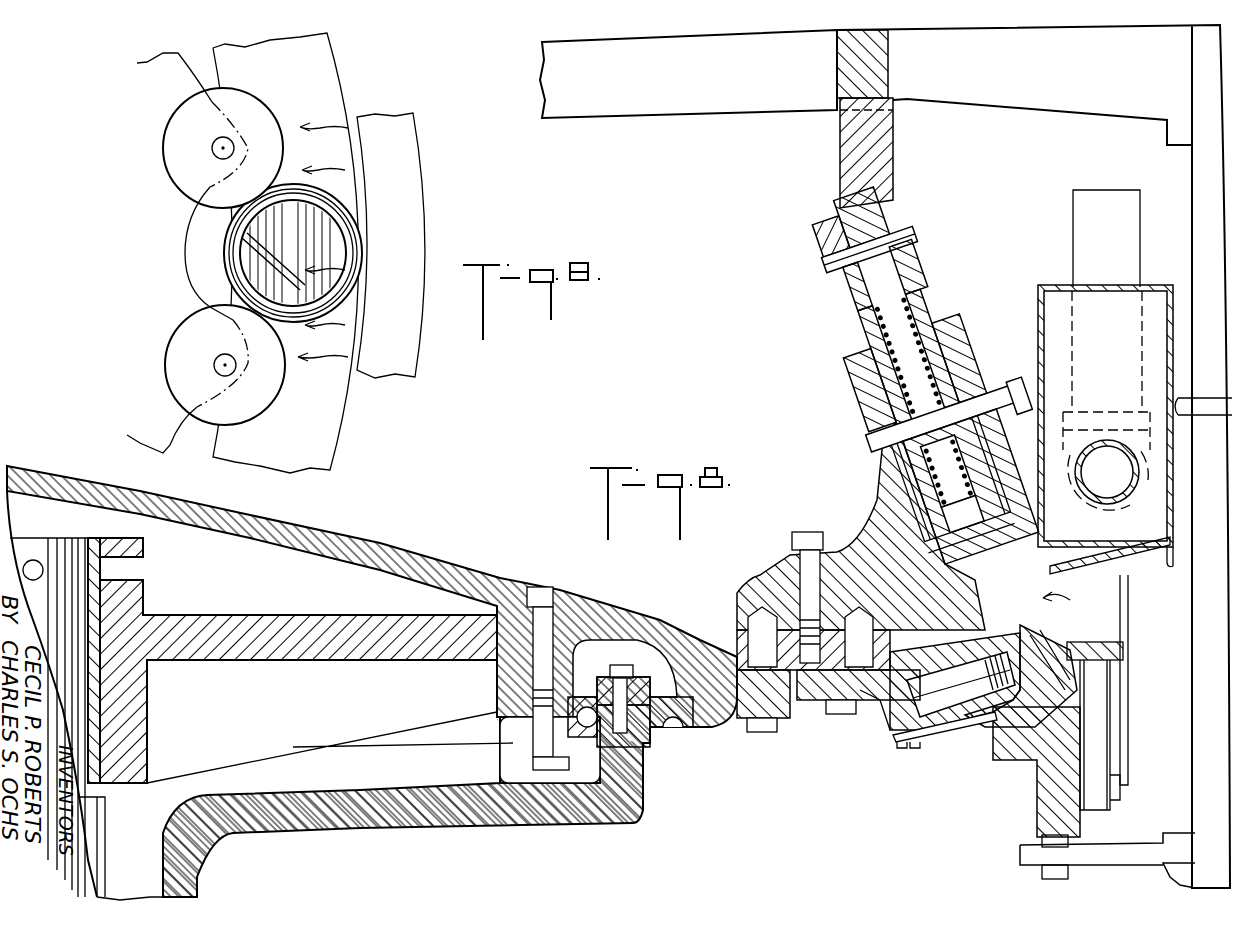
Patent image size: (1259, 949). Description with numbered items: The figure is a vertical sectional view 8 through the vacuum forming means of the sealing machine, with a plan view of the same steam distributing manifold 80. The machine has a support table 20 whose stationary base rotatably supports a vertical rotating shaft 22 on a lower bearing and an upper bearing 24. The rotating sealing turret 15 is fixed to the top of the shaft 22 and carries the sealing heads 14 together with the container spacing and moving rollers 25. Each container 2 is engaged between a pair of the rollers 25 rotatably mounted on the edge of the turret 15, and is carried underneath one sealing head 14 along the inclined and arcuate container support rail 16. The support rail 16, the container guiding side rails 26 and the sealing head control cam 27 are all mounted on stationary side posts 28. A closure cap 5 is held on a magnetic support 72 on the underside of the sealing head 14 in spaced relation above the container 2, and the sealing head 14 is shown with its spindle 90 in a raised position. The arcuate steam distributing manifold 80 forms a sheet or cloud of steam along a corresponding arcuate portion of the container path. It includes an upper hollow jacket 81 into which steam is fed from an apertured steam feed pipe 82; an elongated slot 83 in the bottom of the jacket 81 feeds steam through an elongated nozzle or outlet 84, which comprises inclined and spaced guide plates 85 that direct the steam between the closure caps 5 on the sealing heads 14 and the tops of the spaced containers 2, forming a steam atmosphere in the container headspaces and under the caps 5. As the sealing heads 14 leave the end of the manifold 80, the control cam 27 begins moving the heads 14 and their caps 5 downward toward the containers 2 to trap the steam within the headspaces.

In FIG. 8, the container 2 is at (299, 259).
In FIG. 9, the container 2 is at (1108, 675).
In FIG. 9, the closure cap 5 is at (933, 592).
In FIG. 9, the chute 8 is at (1190, 283).
In FIG. 9, the sealing head 14 is at (943, 292).
In FIG. 8, the rotating sealing turret 15 is at (188, 252).
In FIG. 9, the rotating sealing turret 15 is at (424, 540).
In FIG. 8, the container support rail 16 is at (322, 83).
In FIG. 9, the container support rail 16 is at (1065, 732).
In FIG. 9, the support table 20 is at (379, 823).
In FIG. 9, the vertical rotating shaft 22 is at (62, 560).
In FIG. 9, the upper bearing 24 is at (640, 752).
In FIG. 8, the container spacing and moving roller 25 is at (256, 110).
In FIG. 9, the container spacing and moving roller 25 is at (945, 700).
In FIG. 9, the container guiding side rail 26 is at (1128, 640).
In FIG. 9, the sealing head control cam 27 is at (888, 160).
In FIG. 9, the stationary side post 28 is at (1205, 170).
In FIG. 9, the magnetic support 72 is at (977, 603).
In FIG. 8, the steam distributing manifold 80 is at (408, 165).
In FIG. 9, the upper hollow jacket 81 is at (1170, 355).
In FIG. 9, the apertured steam feed pipe 82 is at (1140, 470).
In FIG. 9, the elongated slot 83 is at (1170, 545).
In FIG. 9, the elongated nozzle 84 is at (1074, 608).
In FIG. 9, the guide plate 85 is at (1098, 565).
In FIG. 9, the spindle 90 is at (937, 322).